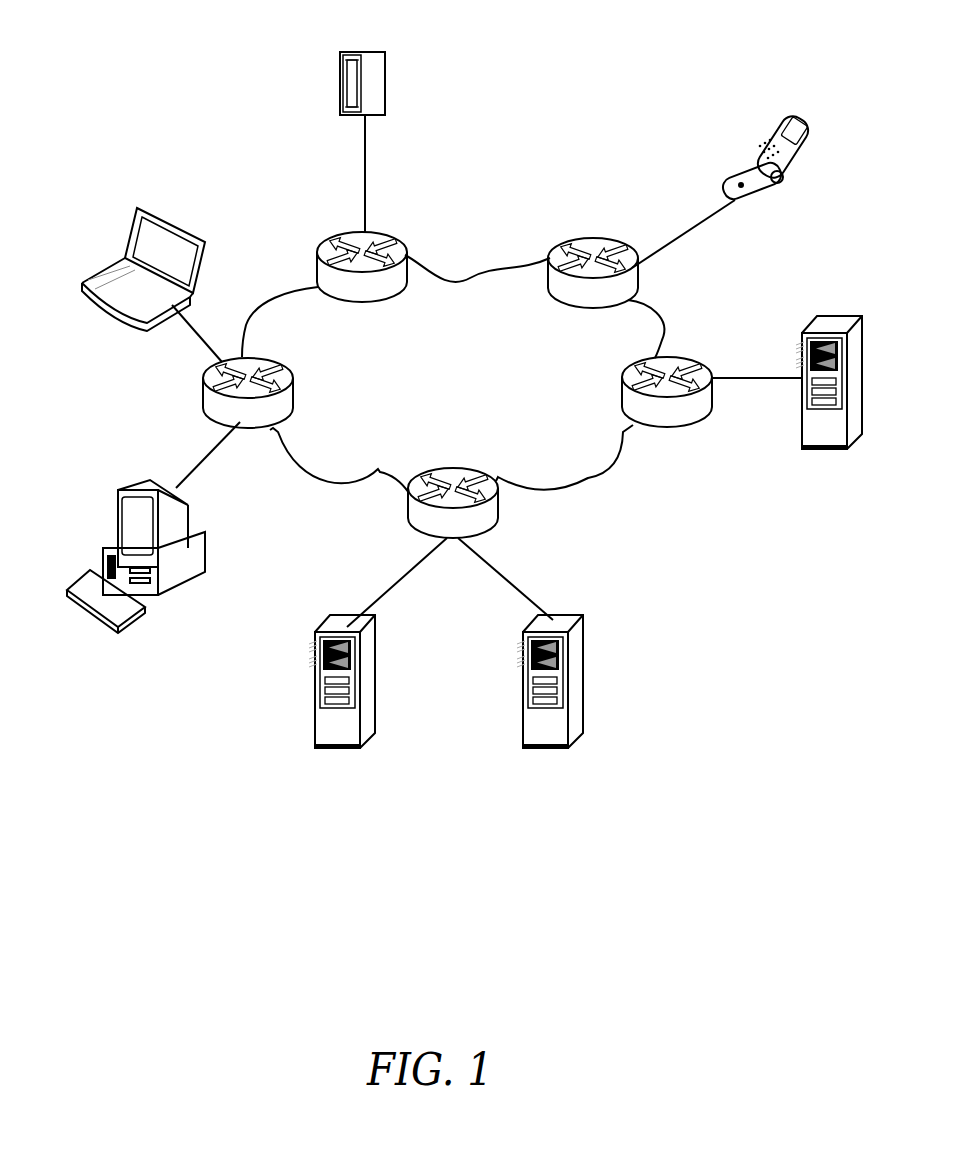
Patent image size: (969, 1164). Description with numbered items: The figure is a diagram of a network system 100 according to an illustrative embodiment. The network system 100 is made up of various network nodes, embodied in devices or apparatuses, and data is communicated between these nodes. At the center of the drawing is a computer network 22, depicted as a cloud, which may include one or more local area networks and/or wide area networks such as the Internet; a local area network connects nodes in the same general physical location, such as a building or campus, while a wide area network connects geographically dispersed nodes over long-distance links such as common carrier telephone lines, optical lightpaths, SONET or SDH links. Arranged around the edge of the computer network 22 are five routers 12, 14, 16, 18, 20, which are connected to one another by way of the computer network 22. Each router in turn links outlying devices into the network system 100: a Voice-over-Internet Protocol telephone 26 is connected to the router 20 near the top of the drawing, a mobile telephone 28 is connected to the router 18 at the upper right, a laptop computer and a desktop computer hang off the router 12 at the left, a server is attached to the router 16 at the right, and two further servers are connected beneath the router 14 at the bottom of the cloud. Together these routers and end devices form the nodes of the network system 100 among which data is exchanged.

The network system 100 is at (190, 82).
The router 12 is at (207, 387).
The router 14 is at (410, 518).
The router 16 is at (706, 413).
The router 18 is at (550, 256).
The router 20 is at (336, 238).
The computer network 22 is at (590, 480).
The Voice-over-Internet Protocol telephone 26 is at (363, 50).
The mobile telephone 28 is at (757, 157).